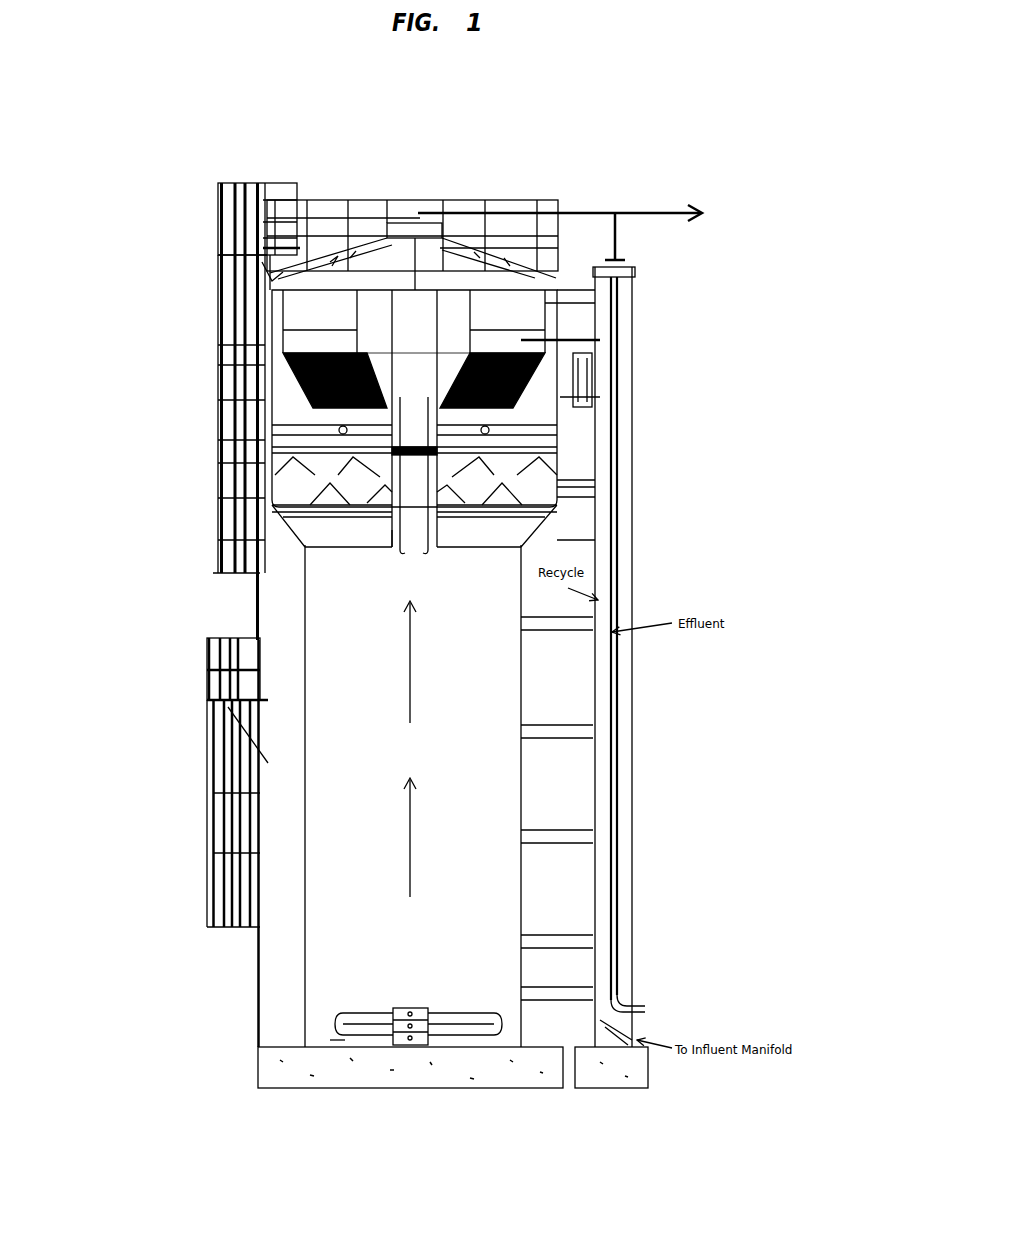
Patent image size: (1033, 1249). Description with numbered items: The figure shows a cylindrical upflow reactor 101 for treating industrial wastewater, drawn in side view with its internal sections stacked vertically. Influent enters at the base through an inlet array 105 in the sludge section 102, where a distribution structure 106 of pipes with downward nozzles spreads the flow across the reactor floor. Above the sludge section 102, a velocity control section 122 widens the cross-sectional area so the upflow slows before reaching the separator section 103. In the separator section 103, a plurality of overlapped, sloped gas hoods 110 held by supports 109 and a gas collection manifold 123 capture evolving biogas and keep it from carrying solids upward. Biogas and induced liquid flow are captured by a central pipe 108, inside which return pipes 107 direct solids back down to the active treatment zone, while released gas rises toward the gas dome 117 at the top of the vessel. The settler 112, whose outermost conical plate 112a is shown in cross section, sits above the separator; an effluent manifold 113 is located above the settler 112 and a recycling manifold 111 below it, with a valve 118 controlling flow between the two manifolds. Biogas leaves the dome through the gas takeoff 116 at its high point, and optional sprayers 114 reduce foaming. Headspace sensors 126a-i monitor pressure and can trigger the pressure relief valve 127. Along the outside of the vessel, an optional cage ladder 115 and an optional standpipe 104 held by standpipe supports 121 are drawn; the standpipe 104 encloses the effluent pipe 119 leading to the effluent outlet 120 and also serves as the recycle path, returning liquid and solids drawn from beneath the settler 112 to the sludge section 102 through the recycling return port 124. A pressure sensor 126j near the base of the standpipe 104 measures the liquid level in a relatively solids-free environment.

The upflow reactor 101 is at (675, 207).
The sludge section 102 is at (526, 787).
The separator section 103 is at (560, 480).
The standpipe 104 is at (633, 688).
The inlet array 105 is at (330, 1034).
The distribution structure 106 is at (415, 1010).
The return pipes 107 is at (430, 550).
The pipe 108 is at (393, 535).
The supports 109 is at (310, 518).
The gas hoods 110 is at (300, 498).
The recycling manifold 111 is at (338, 428).
The settler 112 is at (297, 376).
The outermost conical plate 112a is at (548, 322).
The effluent manifold 113 is at (285, 318).
The sprayers 114 is at (268, 266).
The cage ladder 115 is at (218, 222).
The gas takeoff 116 is at (480, 205).
The gas dome 117 is at (570, 308).
The valve 118 is at (578, 397).
The pipe 119 is at (615, 835).
The effluent outlet 120 is at (640, 1010).
The standpipe supports 121 is at (553, 935).
The velocity control section 122 is at (540, 533).
The gas collection manifold 123 is at (263, 461).
The recycling return port 124 is at (330, 1044).
The sensors 126a-i is at (310, 245).
The pressure sensor 126j is at (635, 1035).
The pressure relief valve 127 is at (417, 205).